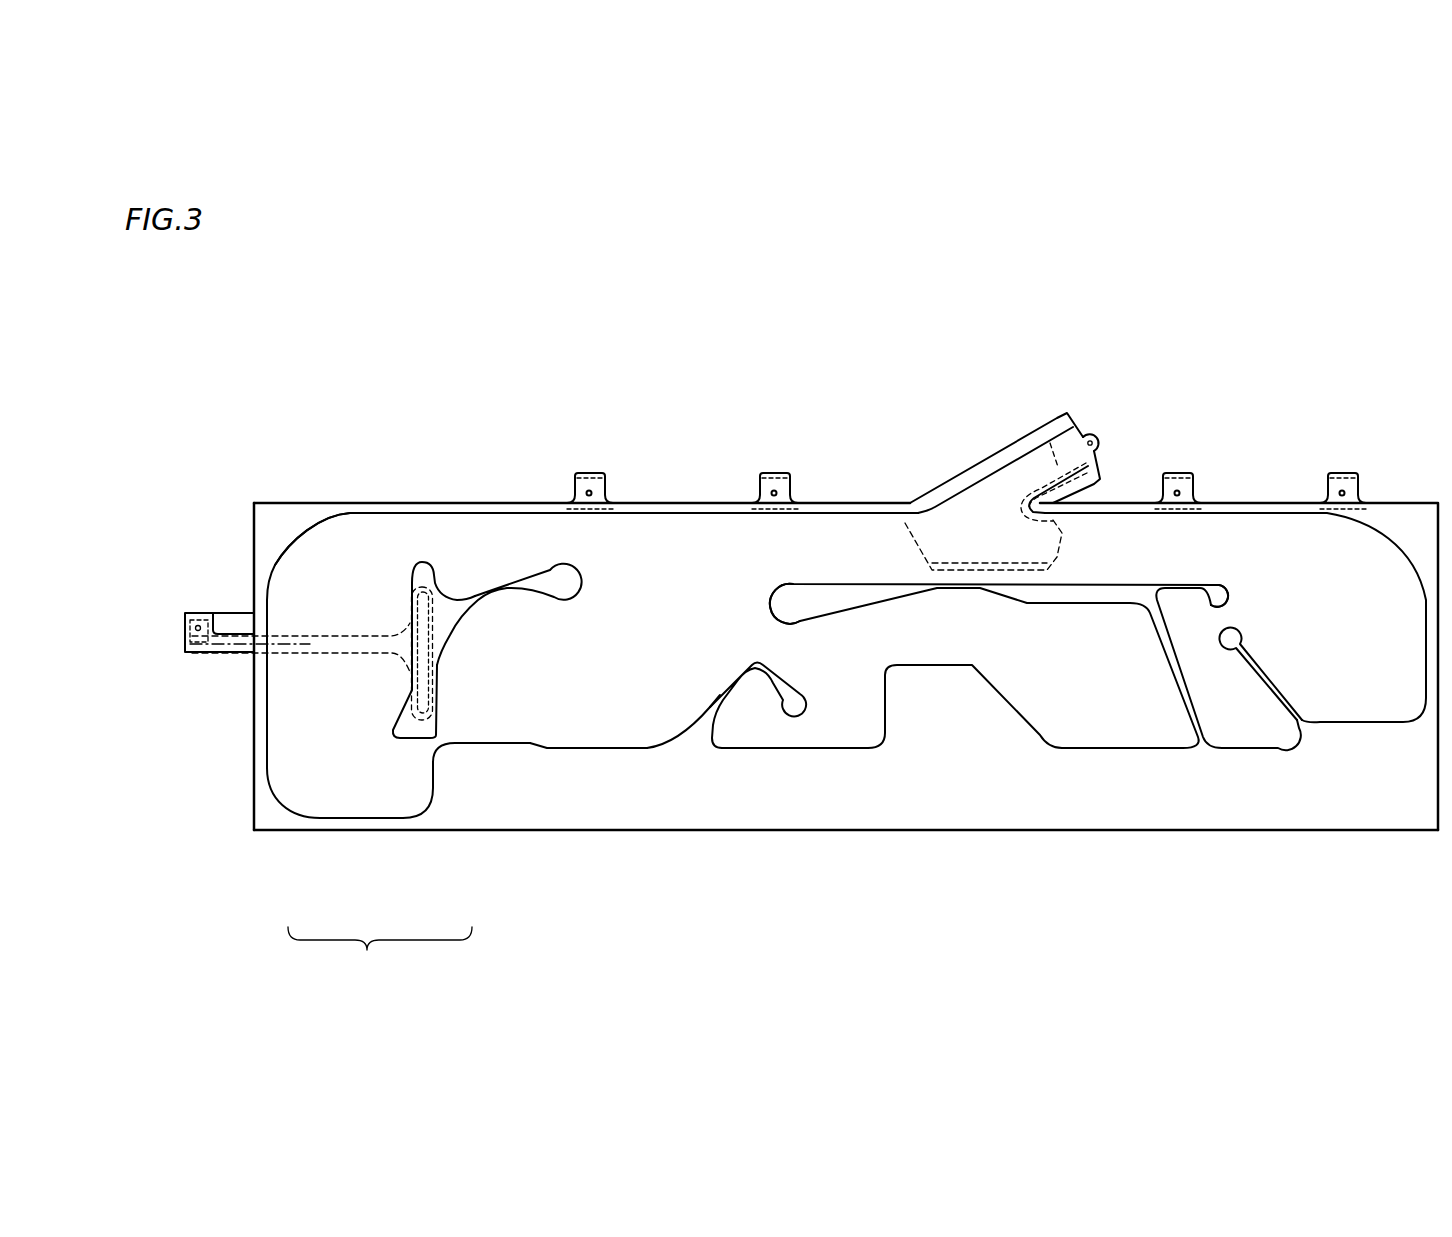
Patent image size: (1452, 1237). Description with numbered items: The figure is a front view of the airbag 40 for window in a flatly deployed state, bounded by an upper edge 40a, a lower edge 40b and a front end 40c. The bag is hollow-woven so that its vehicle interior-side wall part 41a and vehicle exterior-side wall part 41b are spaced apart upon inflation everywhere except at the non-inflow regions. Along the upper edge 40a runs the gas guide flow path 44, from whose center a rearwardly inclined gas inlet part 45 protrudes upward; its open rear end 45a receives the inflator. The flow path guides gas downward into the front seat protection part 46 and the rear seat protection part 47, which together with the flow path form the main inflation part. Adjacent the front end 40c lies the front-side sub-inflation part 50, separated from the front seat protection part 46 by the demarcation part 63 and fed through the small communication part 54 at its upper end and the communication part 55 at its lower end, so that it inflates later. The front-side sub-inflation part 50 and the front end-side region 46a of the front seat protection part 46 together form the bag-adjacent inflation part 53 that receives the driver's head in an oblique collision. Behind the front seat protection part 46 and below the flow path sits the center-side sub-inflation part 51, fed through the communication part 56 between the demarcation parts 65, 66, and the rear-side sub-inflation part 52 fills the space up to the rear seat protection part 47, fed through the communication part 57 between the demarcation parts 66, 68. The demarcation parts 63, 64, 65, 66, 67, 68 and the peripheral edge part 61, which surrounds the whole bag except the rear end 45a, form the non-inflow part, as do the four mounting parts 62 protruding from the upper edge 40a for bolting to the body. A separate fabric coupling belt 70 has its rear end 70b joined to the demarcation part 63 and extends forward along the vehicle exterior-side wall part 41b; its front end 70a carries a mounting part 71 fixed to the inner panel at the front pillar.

The airbag for window 40 is at (1290, 420).
The upper edge 40a is at (492, 510).
The lower edge 40b is at (512, 820).
The front end 40c is at (262, 773).
The vehicle interior-side wall part 41a is at (662, 722).
The vehicle exterior-side wall part 41b is at (683, 708).
The gas guide flow path 44 is at (838, 523).
The gas inlet part 45 is at (1019, 477).
The rear end 45a is at (1080, 433).
The front seat protection part 46 is at (592, 745).
The front end-side region 46a is at (473, 715).
The rear seat protection part 47 is at (1368, 707).
The front-side sub-inflation part 50 is at (320, 803).
The center-side sub-inflation part 51 is at (877, 713).
The rear-side sub-inflation part 52 is at (1247, 737).
The bag-adjacent inflation part 53 is at (380, 956).
The communication part 54 is at (418, 535).
The communication part 55 is at (428, 743).
The communication part 56 is at (770, 642).
The communication part 57 is at (1230, 617).
The peripheral edge part 61 is at (680, 512).
The mounting part 62 is at (587, 473).
The demarcation part 63 is at (410, 565).
The demarcation part 64 is at (563, 592).
The demarcation part 65 is at (730, 690).
The demarcation part 66 is at (860, 593).
The demarcation part 67 is at (1177, 680).
The demarcation part 68 is at (1243, 650).
The coupling belt 70 is at (323, 633).
The front end 70a is at (196, 652).
The rear end 70b is at (422, 682).
The mounting part 71 is at (201, 613).